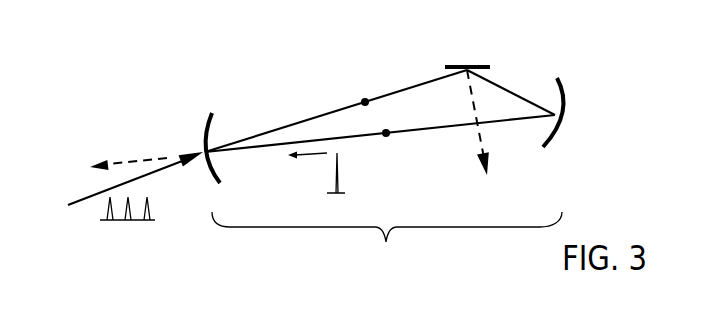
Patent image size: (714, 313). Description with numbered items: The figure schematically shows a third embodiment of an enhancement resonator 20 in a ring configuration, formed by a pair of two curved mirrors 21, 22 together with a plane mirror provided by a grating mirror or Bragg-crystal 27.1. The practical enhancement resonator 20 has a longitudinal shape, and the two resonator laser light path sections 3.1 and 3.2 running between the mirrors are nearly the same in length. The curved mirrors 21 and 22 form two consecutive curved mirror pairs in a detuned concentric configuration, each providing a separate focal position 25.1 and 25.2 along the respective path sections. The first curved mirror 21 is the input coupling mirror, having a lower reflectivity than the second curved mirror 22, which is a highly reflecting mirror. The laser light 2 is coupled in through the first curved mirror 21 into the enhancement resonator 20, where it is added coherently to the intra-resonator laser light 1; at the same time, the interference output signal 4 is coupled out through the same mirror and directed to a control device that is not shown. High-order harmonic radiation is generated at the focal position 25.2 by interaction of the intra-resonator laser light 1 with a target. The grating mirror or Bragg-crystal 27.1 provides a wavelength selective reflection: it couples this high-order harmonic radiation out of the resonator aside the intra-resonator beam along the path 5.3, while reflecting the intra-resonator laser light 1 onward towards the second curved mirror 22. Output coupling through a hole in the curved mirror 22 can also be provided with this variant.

The intra-resonator laser light 1 is at (325, 175).
The laser light 2 is at (100, 227).
The interference output signal 4 is at (145, 155).
The enhancement resonator 20 is at (400, 273).
The first curved mirror 21 is at (203, 158).
The second curved mirror 22 is at (567, 97).
The resonator laser light path section 3.1 is at (290, 125).
The resonator laser light path section 3.2 is at (288, 143).
The focal position 25.1 is at (395, 133).
The focal position 25.2 is at (365, 102).
The grating mirror or Bragg-crystal 27.1 is at (428, 68).
The output coupling path 5.3 is at (498, 129).